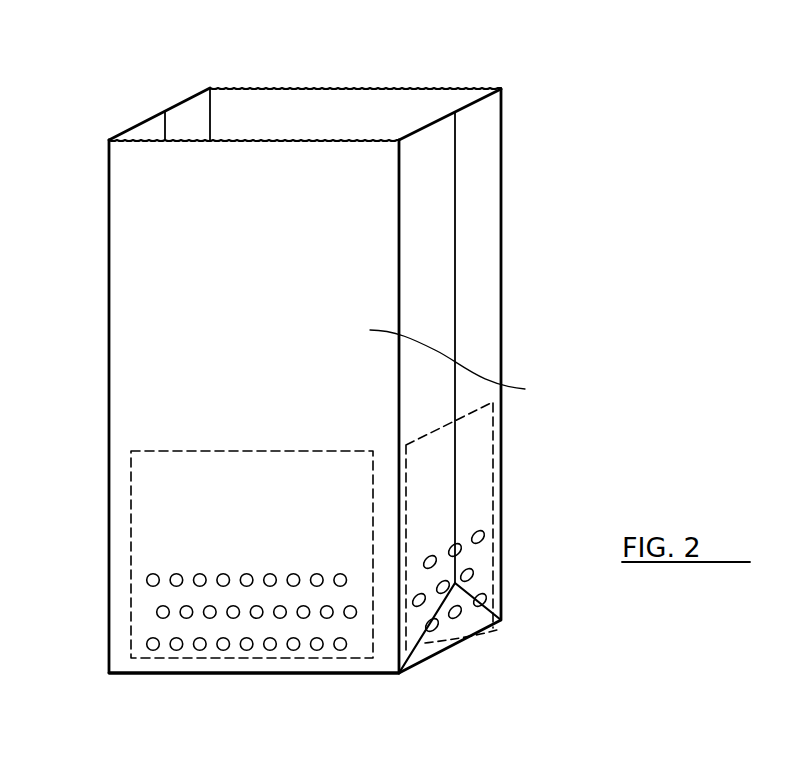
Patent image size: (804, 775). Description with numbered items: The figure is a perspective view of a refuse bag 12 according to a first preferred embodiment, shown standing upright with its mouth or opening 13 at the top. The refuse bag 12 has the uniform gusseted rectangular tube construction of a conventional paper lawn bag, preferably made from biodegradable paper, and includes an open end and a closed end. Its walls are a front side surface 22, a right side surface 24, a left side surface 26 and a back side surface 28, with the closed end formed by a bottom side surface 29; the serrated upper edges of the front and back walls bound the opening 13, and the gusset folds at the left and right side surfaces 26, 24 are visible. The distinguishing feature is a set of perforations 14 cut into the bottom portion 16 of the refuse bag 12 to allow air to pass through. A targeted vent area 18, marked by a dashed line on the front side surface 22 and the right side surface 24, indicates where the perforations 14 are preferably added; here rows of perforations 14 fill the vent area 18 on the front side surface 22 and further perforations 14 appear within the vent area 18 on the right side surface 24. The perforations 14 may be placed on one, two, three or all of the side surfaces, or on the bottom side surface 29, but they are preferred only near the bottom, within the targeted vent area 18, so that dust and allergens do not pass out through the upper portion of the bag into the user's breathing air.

The refuse bag 12 is at (540, 333).
The opening 13 is at (411, 108).
The perforations 14 is at (150, 642).
The bottom portion 16 is at (497, 630).
The targeted vent area 18 is at (170, 475).
The front side surface 22 is at (466, 368).
The right side surface 24 is at (492, 242).
The left side surface 26 is at (148, 123).
The back side surface 28 is at (269, 86).
The bottom side surface 29 is at (386, 677).